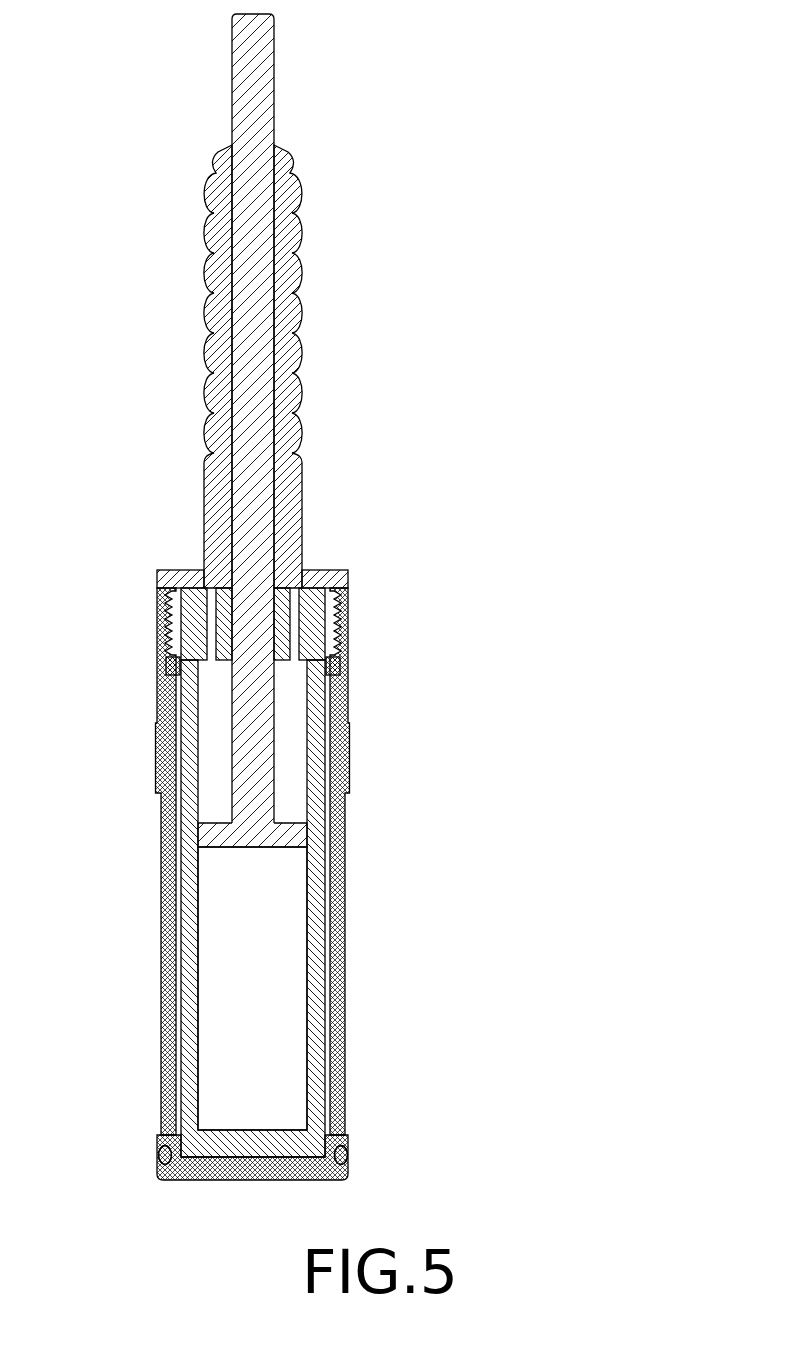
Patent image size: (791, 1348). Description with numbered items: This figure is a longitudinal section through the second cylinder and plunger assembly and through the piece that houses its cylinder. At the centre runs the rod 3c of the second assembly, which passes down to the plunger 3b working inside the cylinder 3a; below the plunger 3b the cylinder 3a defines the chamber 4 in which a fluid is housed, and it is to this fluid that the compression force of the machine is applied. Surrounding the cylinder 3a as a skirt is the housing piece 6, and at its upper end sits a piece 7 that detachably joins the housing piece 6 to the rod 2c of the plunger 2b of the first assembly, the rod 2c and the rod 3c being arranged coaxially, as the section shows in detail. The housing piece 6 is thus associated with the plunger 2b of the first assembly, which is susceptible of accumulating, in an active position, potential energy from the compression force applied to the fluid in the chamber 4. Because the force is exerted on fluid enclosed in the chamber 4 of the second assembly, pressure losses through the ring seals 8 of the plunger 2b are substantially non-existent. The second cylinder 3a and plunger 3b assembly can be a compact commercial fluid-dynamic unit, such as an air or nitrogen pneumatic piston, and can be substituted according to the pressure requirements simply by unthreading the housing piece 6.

The plunger 2b is at (243, 1170).
The rod 2c is at (292, 488).
The cylinder 3a is at (192, 1072).
The plunger 3b is at (267, 833).
The rod 3c is at (253, 395).
The chamber 4 is at (280, 1000).
The housing piece 6 is at (343, 715).
The piece 7 is at (173, 582).
The ring seals 8 is at (157, 1153).